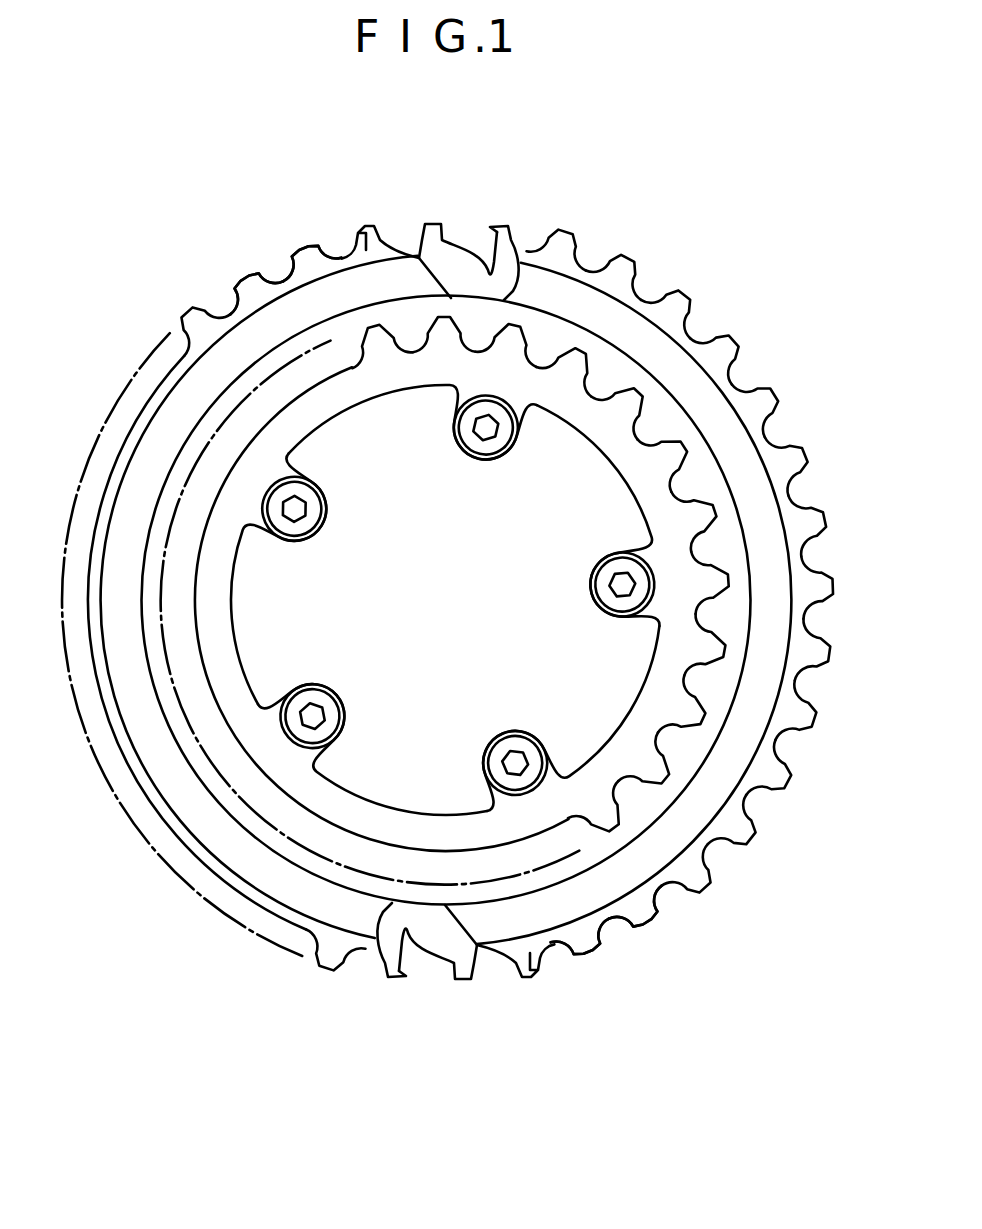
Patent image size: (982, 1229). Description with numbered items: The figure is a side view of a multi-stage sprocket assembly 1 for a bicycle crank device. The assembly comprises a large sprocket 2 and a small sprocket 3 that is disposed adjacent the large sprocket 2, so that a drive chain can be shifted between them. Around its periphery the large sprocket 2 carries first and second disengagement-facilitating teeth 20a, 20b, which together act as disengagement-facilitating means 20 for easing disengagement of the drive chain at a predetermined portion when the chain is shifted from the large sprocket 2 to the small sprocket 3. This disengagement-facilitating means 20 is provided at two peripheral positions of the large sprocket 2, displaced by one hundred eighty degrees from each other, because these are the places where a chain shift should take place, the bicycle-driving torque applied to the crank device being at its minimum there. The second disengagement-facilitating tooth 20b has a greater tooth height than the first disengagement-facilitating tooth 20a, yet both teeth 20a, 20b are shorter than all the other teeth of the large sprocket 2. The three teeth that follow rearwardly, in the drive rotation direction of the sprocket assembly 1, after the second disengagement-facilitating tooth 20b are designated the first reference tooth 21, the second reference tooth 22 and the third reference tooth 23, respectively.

The multi-stage sprocket assembly 1 is at (745, 330).
The large sprocket 2 is at (625, 327).
The small sprocket 3 is at (583, 420).
The disengagement-facilitating means 20 is at (302, 173).
The first disengagement-facilitating tooth 20a is at (243, 276).
The second disengagement-facilitating tooth 20b is at (302, 246).
The first reference tooth 21 is at (367, 225).
The second reference tooth 22 is at (432, 223).
The third reference tooth 23 is at (498, 225).